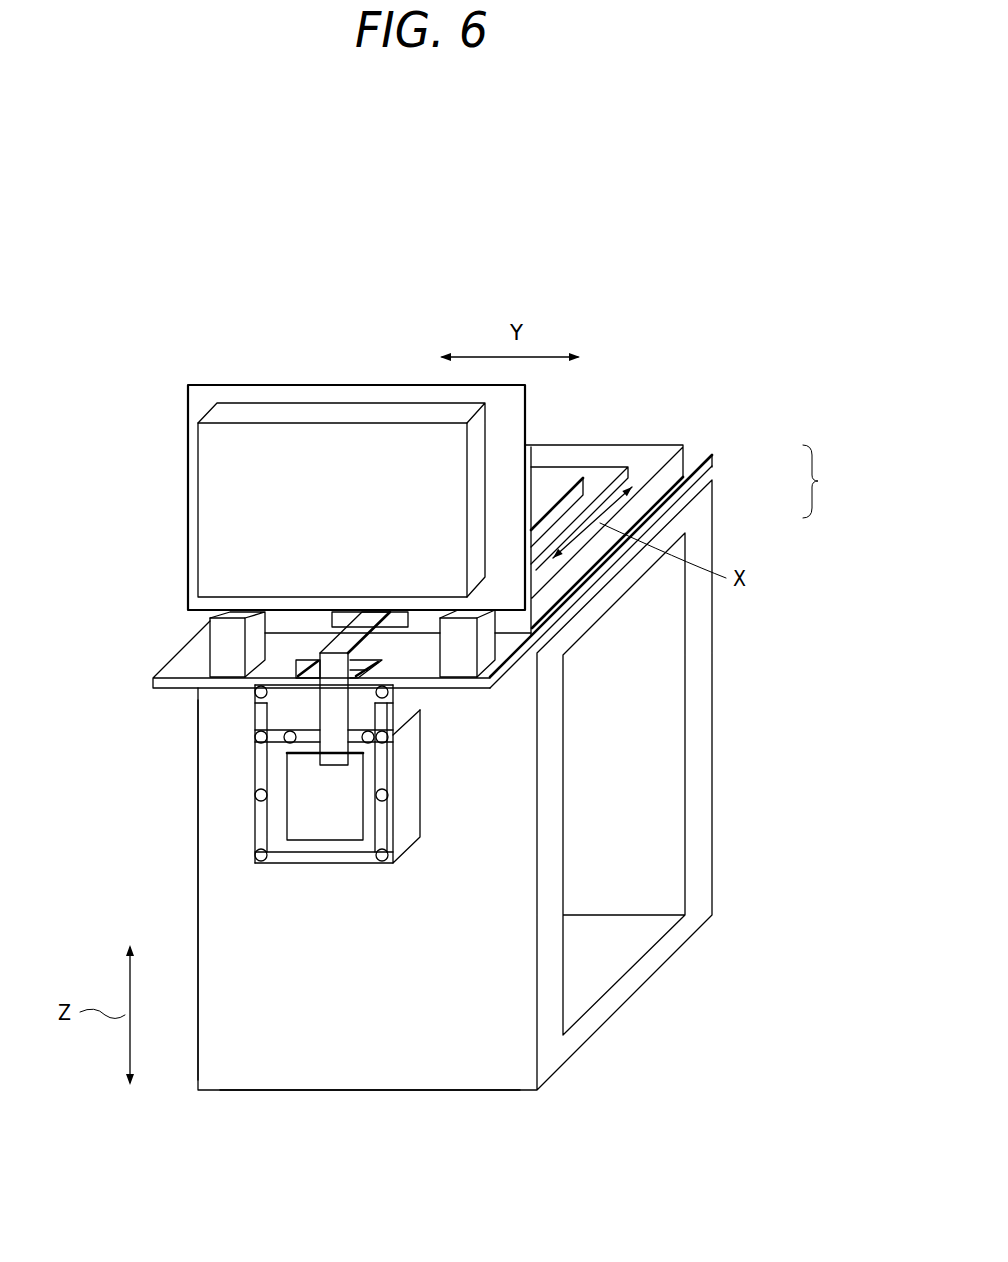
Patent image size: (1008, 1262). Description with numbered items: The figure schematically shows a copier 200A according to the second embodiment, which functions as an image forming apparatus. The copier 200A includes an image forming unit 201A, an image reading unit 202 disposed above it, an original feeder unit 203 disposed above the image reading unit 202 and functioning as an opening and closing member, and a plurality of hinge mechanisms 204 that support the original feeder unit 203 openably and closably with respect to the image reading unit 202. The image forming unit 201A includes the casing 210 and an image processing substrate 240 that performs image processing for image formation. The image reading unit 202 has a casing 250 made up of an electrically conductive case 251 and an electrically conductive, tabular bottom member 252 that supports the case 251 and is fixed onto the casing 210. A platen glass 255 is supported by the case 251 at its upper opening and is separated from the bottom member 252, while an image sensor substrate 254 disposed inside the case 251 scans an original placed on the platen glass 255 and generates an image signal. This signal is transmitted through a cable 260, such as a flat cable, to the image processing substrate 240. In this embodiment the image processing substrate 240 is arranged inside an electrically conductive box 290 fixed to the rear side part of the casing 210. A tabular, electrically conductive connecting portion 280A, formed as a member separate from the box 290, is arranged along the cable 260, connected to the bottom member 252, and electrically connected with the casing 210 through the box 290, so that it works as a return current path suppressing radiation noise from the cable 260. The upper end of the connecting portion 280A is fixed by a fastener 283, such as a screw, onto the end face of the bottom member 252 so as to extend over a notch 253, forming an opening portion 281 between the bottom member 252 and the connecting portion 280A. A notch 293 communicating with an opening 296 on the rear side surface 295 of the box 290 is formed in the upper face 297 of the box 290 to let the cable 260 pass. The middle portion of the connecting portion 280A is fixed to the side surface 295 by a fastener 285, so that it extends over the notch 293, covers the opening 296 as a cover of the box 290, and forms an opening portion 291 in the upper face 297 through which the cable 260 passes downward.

The copier 200A is at (392, 216).
The image forming unit 201A is at (726, 685).
The image reading unit 202 is at (693, 438).
The original feeder unit 203 is at (378, 383).
The hinge mechanisms 204 is at (230, 648).
The casing 210 is at (212, 800).
The image processing substrate 240 is at (303, 812).
The casing 250 is at (831, 481).
The case 251 is at (700, 468).
The bottom member 252 is at (690, 490).
The notch 253 is at (382, 672).
The image sensor substrate 254 is at (575, 472).
The platen glass 255 is at (548, 478).
The cable 260 is at (356, 612).
The connecting portion 280A is at (301, 826).
The opening portion 281 is at (312, 657).
The fastener 283 is at (253, 703).
The fastener 285 is at (263, 862).
The box 290 is at (415, 790).
The opening portion 291 is at (267, 718).
The notch 293 is at (372, 732).
The side surface 295 is at (400, 858).
The opening 296 is at (315, 857).
The upper face 297 is at (400, 716).